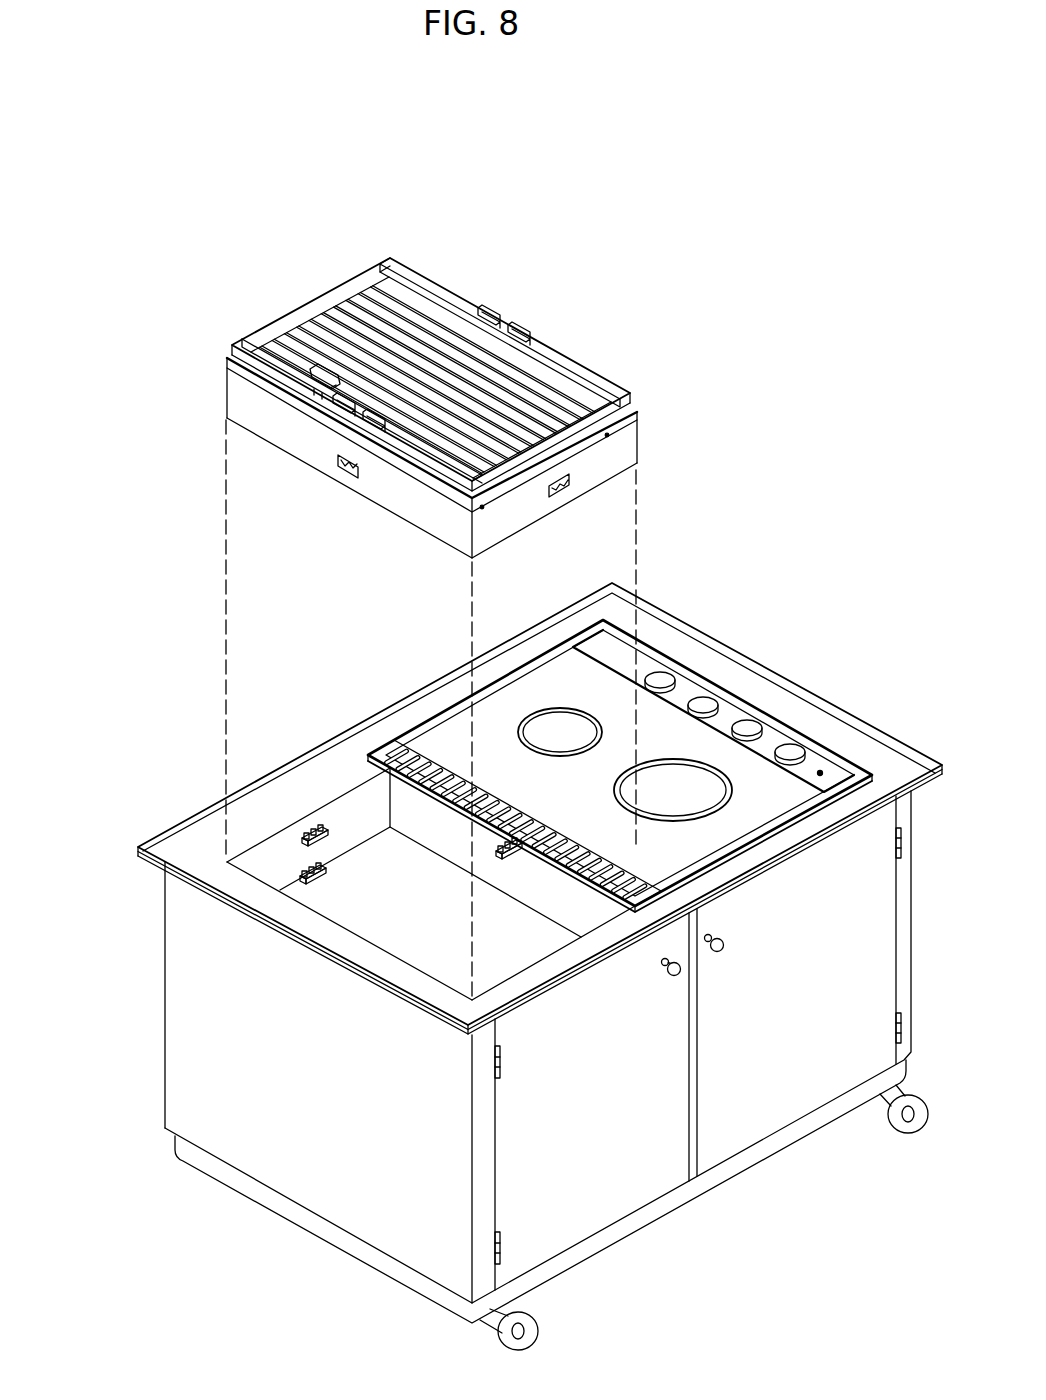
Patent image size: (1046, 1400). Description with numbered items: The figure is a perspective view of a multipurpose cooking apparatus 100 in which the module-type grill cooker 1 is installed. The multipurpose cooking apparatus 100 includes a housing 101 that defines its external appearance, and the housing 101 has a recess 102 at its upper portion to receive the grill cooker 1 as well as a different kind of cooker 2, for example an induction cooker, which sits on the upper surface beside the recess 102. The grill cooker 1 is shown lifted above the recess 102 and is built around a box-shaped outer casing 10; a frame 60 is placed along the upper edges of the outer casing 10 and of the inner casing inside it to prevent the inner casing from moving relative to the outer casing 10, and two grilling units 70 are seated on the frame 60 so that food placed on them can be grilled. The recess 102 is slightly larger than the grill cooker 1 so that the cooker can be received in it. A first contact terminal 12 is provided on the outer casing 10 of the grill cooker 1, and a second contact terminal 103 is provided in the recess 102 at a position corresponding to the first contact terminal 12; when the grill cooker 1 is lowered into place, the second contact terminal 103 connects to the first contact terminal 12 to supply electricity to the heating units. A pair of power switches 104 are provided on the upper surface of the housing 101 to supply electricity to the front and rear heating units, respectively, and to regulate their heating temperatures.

The grill cooker 1 is at (612, 308).
The different kind of cooker 2 is at (668, 724).
The outer casing 10 is at (215, 396).
The first contact terminal 12 is at (348, 478).
The frame 60 is at (632, 425).
The grilling units 70 is at (548, 324).
The multipurpose cooking apparatus 100 is at (124, 814).
The housing 101 is at (214, 1042).
The recess 102 is at (379, 806).
The second contact terminal 103 is at (318, 828).
The power switches 104 is at (760, 722).